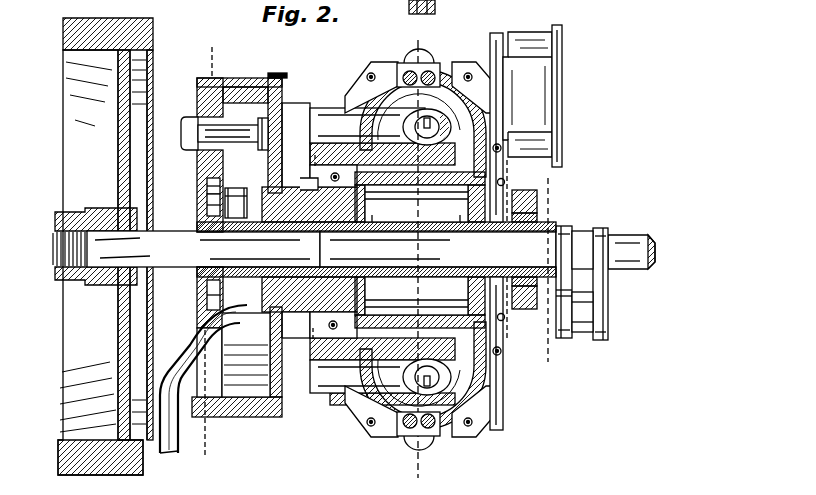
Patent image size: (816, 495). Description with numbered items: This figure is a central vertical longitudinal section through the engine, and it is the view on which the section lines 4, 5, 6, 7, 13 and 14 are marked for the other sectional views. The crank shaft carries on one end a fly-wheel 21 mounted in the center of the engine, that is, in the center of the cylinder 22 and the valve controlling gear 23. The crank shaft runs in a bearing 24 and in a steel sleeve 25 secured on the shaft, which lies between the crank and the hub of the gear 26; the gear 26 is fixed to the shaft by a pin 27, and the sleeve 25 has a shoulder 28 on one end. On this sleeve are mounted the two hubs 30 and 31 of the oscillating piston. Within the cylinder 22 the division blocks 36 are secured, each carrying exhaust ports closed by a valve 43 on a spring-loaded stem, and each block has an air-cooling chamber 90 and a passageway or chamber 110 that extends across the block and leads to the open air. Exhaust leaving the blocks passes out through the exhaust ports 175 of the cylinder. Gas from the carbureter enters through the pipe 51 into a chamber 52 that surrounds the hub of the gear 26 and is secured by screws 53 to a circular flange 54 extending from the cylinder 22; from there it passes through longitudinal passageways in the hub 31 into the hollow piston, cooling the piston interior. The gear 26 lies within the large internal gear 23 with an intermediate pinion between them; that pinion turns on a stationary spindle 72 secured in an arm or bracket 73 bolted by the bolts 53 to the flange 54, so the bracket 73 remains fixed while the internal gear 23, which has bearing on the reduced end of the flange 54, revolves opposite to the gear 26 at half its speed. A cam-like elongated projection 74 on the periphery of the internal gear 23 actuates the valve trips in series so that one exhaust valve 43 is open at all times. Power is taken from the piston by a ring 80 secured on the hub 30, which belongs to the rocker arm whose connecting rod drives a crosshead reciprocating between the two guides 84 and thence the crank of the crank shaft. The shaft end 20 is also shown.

The section line 4— 4 is at (418, 40).
The section line 5— 5 is at (314, 160).
The section line 6— 6 is at (505, 172).
The section line 7— 7 is at (212, 47).
The section line 13— 13 is at (418, 45).
The section line 14— 14 is at (556, 179).
The driven shaft 20 is at (642, 235).
The fly-wheel 21 is at (103, 246).
The cylinder 22 is at (458, 70).
The internal gear 23 is at (270, 70).
The bearing 24 is at (572, 230).
The steel sleeve 25 is at (541, 300).
The gear 26 is at (205, 208).
The pin 27 is at (200, 270).
The shoulder 28 is at (550, 228).
The piston hub 30 is at (492, 237).
The piston hub 31 is at (306, 235).
The division block 36 is at (392, 73).
The exhaust valve 43 is at (434, 129).
The pipe 51 is at (176, 452).
The chamber 52 is at (205, 185).
The screws 53 is at (236, 188).
The circular flange 54 is at (308, 186).
The stationary spindle 72 is at (195, 117).
The arm or bracket 73 is at (235, 112).
The cam-like elongated projection 74 is at (288, 80).
The ring 80 is at (545, 193).
The guides 84 is at (563, 70).
The chamber 90 is at (466, 126).
The passageway or chamber 110 is at (498, 357).
The exhaust port 175 is at (326, 123).